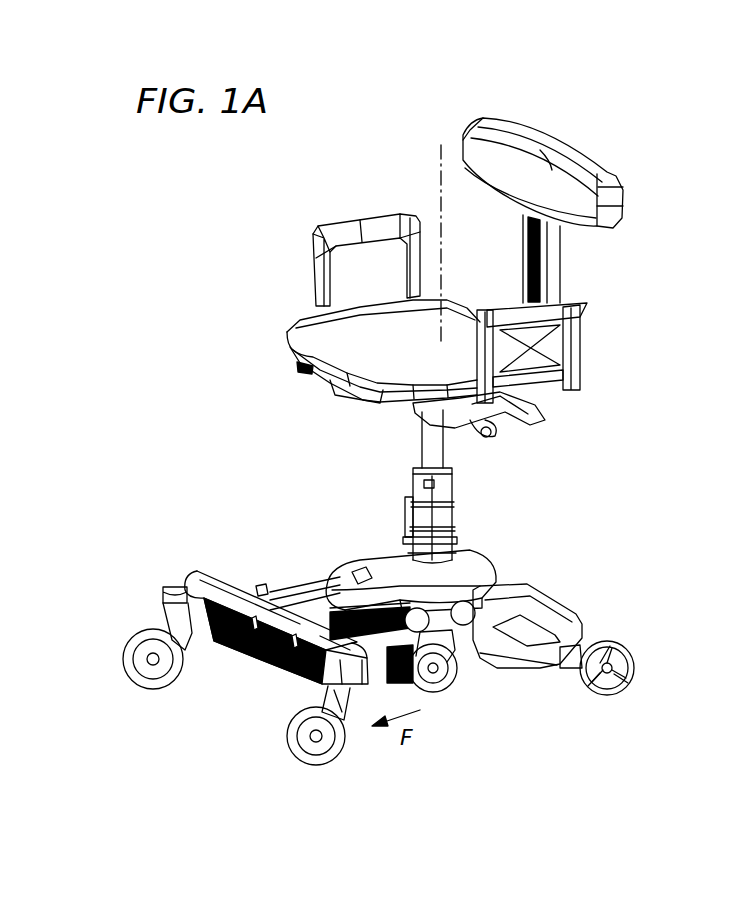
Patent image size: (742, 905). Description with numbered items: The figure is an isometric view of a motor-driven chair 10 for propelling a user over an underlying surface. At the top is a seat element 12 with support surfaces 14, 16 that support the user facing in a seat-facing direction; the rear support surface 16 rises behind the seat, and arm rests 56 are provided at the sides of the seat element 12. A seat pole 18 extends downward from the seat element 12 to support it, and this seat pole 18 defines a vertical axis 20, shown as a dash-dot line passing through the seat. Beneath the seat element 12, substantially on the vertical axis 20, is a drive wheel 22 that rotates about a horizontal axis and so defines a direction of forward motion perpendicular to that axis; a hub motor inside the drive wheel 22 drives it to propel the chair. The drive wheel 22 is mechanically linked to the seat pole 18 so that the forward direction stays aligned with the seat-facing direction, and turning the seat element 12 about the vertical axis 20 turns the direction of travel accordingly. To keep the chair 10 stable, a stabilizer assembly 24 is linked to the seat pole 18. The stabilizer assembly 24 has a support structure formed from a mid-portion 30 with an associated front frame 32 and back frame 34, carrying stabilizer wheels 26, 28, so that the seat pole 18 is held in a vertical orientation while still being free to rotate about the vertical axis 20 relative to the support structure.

The motor-driven chair 10 is at (661, 182).
The seat element 12 is at (616, 310).
The support surface 14 is at (294, 333).
The rear support surface 16 is at (561, 203).
The seat pole 18 is at (444, 450).
The vertical axis 20 is at (441, 172).
The drive wheel 22 is at (440, 684).
The stabilizer assembly 24 is at (242, 560).
The stabilizer wheels 26 is at (155, 690).
The stabilizer wheel 28 is at (610, 694).
The mid-portion 30 is at (345, 560).
The front frame 32 is at (238, 678).
The back frame 34 is at (562, 612).
The arm rests 56 is at (334, 226).